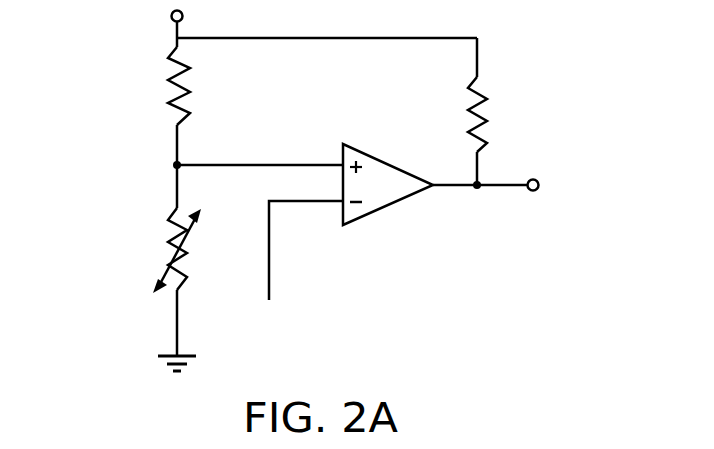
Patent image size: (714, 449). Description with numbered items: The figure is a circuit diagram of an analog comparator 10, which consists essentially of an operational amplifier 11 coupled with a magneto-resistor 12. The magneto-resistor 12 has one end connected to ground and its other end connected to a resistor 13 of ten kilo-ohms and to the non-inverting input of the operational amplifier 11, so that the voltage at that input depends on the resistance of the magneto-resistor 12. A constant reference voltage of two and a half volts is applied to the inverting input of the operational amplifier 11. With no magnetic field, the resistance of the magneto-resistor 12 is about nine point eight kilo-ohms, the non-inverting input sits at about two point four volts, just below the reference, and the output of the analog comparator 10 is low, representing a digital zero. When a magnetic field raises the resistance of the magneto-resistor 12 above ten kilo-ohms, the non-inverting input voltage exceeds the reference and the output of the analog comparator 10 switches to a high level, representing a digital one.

The analog comparator 10 is at (589, 64).
The operational amplifier 11 is at (356, 152).
The magneto-resistor 12 is at (166, 205).
The resistor 13 is at (165, 80).